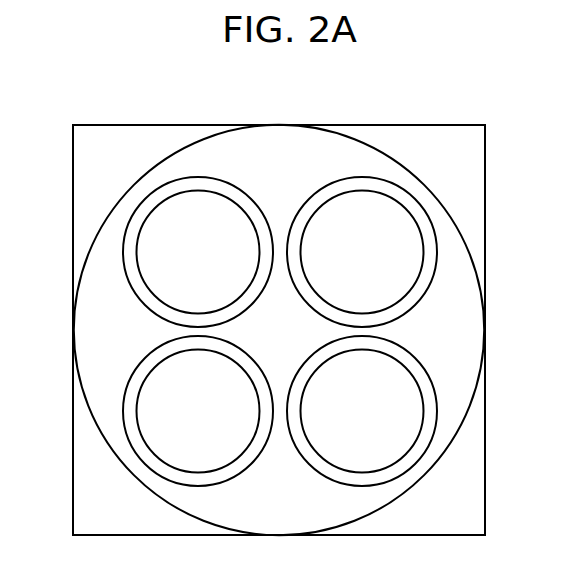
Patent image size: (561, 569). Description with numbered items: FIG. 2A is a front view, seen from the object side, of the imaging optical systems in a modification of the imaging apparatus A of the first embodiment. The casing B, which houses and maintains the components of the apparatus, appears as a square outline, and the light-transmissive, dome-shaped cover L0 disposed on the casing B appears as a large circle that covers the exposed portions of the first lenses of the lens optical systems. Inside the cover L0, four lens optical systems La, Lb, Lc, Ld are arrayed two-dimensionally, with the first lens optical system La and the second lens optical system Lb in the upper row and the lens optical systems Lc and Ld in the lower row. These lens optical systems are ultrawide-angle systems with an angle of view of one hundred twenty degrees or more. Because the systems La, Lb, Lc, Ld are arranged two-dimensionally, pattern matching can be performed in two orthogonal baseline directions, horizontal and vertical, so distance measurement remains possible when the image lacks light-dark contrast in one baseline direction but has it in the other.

The imaging apparatus A is at (448, 115).
The casing B is at (108, 173).
The cover L0 is at (236, 167).
The first lens optical system La is at (173, 255).
The second lens optical system Lb is at (391, 252).
The third lens optical system Lc is at (173, 413).
The fourth lens optical system Ld is at (393, 412).